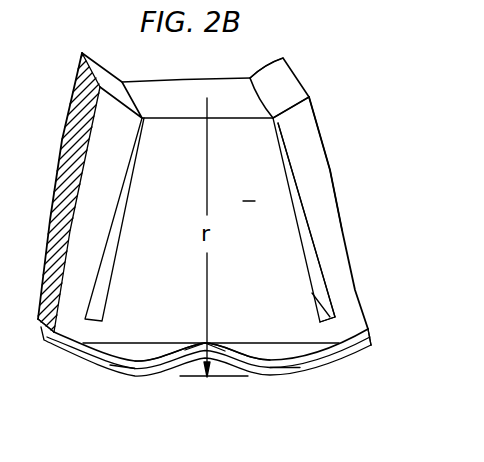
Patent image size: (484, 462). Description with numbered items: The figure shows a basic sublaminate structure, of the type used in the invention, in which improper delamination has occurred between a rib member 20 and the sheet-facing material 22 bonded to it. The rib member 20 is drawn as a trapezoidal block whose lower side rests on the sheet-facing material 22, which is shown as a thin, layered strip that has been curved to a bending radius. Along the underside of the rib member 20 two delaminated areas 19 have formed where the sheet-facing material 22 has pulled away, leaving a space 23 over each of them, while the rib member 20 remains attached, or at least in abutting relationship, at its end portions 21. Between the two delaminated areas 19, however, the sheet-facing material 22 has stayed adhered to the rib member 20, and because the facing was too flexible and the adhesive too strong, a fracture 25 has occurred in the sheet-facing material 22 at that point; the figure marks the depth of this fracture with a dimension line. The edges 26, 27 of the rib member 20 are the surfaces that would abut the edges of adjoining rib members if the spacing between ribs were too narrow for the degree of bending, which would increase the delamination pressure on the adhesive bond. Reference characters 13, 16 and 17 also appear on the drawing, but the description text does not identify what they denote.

The side wall 13 is at (289, 172).
The outer surface 16 is at (275, 233).
The lower edge 17 is at (334, 309).
The delaminated areas 19 is at (147, 350).
The rib member 20 is at (203, 192).
The end portions 21 is at (72, 347).
The sheet-facing material 22 is at (118, 371).
The space 23 is at (162, 350).
The fracture 25 is at (187, 352).
The edge 26 is at (287, 145).
The edge 27 is at (278, 143).